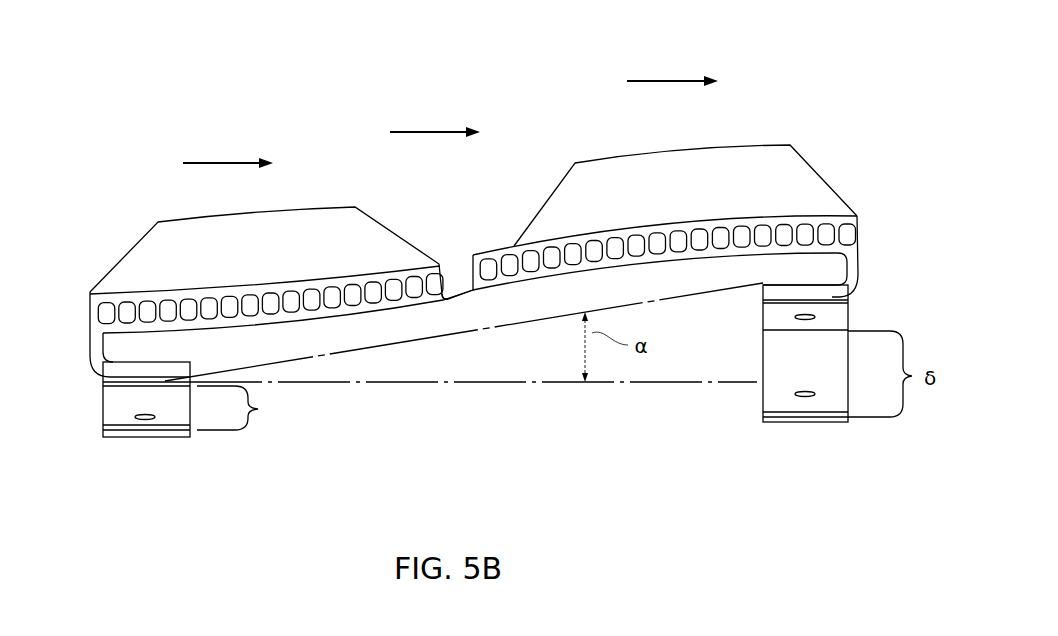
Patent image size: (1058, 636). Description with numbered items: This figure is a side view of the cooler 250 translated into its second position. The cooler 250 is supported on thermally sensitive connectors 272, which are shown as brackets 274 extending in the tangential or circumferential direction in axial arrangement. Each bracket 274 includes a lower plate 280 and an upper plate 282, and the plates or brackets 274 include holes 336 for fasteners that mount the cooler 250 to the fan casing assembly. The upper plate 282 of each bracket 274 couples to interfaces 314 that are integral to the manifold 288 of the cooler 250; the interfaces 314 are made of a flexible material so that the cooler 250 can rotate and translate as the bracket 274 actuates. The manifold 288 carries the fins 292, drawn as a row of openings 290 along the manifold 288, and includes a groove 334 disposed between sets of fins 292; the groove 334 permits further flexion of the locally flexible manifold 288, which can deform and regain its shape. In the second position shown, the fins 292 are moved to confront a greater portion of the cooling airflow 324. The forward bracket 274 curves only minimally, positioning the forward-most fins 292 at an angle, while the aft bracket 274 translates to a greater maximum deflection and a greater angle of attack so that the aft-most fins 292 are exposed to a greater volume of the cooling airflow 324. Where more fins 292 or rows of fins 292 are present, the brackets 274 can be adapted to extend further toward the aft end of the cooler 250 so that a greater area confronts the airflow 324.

The cooler 250 is at (184, 62).
The cooling airflow 324 is at (214, 160).
The fins 292 is at (225, 233).
The louver openings 290 is at (267, 307).
The manifold 288 is at (364, 318).
The groove 334 is at (458, 300).
The interfaces 314 is at (133, 367).
The upper plate 282 is at (103, 383).
The holes 336 is at (140, 416).
The lower plate 280 is at (105, 431).
The thermally sensitive connectors 272 is at (118, 470).
The brackets 274 is at (164, 466).